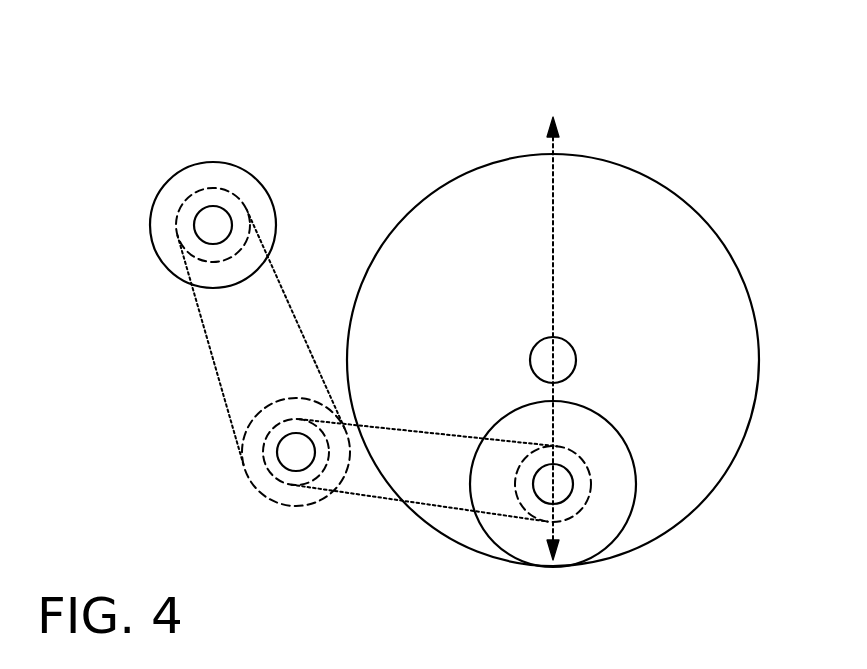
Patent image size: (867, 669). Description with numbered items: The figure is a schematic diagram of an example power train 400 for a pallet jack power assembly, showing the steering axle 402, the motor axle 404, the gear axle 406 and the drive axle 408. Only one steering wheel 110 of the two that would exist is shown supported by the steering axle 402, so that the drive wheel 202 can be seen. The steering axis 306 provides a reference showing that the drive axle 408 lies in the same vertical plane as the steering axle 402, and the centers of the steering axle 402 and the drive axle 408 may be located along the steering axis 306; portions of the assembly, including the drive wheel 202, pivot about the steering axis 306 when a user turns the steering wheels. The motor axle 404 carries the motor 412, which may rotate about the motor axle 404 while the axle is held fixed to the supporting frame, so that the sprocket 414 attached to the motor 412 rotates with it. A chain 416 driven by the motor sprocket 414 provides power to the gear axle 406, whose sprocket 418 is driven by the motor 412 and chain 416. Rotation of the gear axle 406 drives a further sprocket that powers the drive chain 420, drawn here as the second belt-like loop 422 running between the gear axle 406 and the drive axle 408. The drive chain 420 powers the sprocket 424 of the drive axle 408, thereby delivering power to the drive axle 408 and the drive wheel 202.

The power train 400 is at (391, 91).
The steering wheel 110 is at (618, 163).
The steering axis 306 is at (555, 263).
The steering axle 402 is at (571, 342).
The drive wheel 202 is at (630, 517).
The drive axle 408 is at (570, 473).
The sprocket 424 is at (530, 457).
The motor 412 is at (247, 170).
The motor axle 404 is at (196, 215).
The sprocket 414 is at (216, 188).
The chain 416 is at (278, 273).
The gear axle 406 is at (281, 442).
The drive chain 420 is at (263, 452).
The sprocket 418 is at (264, 499).
The second belt 422 is at (380, 499).